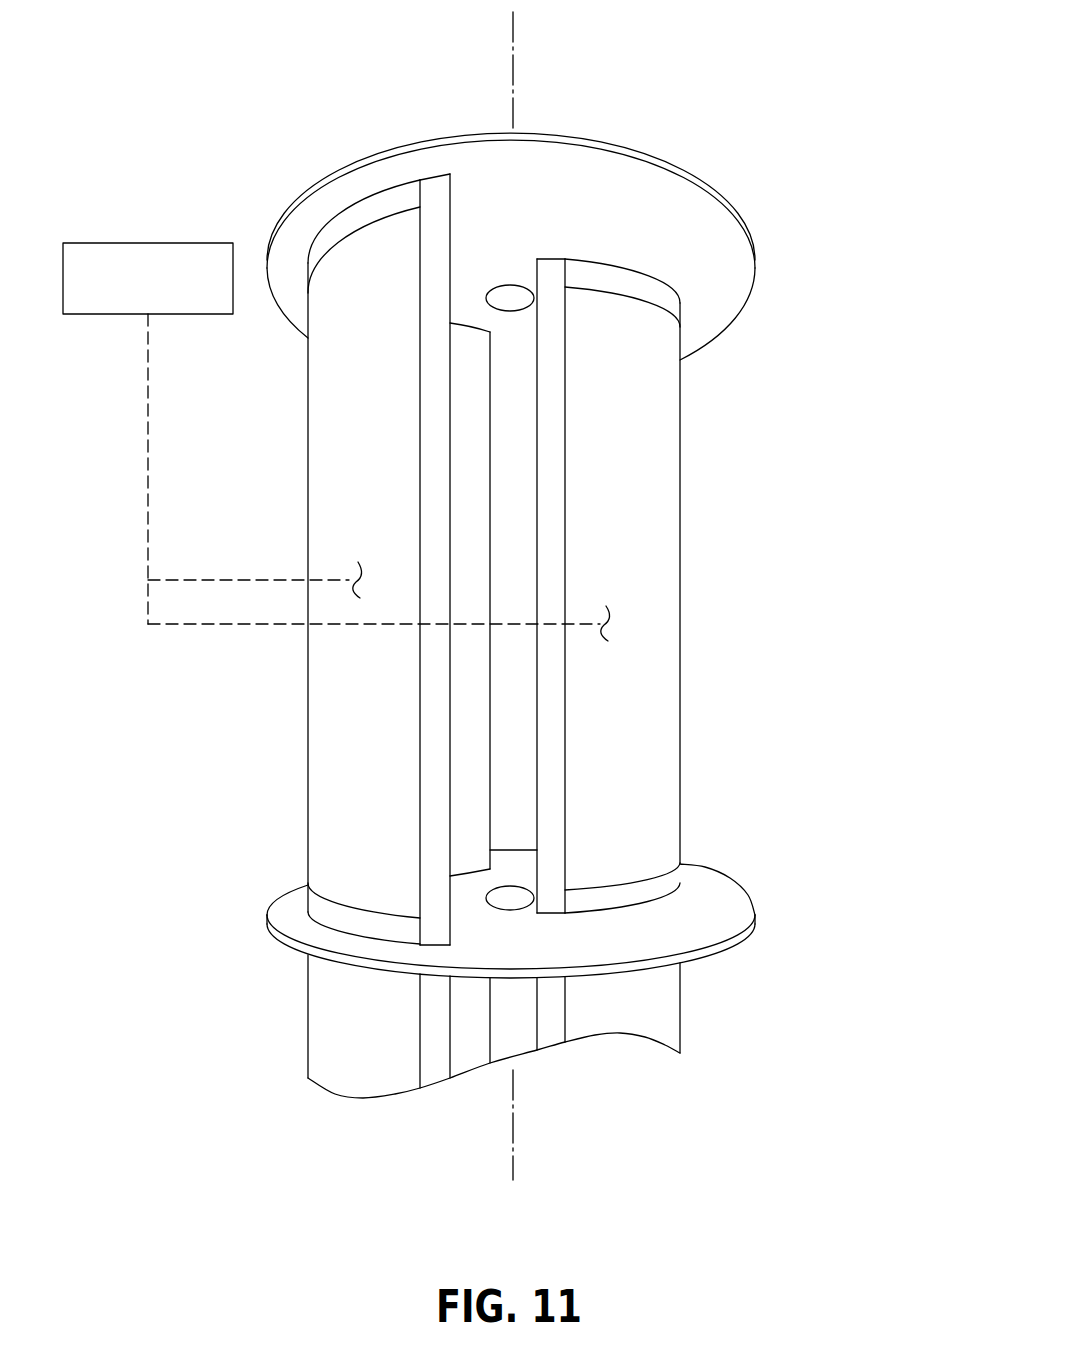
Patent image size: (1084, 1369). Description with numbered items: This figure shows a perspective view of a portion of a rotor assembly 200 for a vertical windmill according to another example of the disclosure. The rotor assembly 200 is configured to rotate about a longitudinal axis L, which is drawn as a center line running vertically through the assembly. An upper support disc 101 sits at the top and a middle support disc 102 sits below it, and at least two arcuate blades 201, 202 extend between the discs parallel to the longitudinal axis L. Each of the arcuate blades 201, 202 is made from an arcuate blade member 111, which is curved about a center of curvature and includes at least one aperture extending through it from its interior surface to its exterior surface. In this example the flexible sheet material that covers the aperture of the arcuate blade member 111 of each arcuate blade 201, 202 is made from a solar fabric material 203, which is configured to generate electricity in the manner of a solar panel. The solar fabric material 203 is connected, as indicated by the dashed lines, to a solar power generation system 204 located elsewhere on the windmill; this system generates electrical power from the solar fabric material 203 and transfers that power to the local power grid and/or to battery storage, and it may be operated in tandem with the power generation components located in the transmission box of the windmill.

The rotor assembly 200 is at (748, 110).
The longitudinal axis L is at (513, 65).
The upper support disc 101 is at (731, 281).
The middle support disc 102 is at (731, 912).
The arcuate blade member 111 is at (663, 882).
The arcuate blade 201 is at (308, 705).
The arcuate blade 202 is at (661, 664).
The solar fabric material 203 is at (341, 502).
The solar power generation system 204 is at (124, 242).